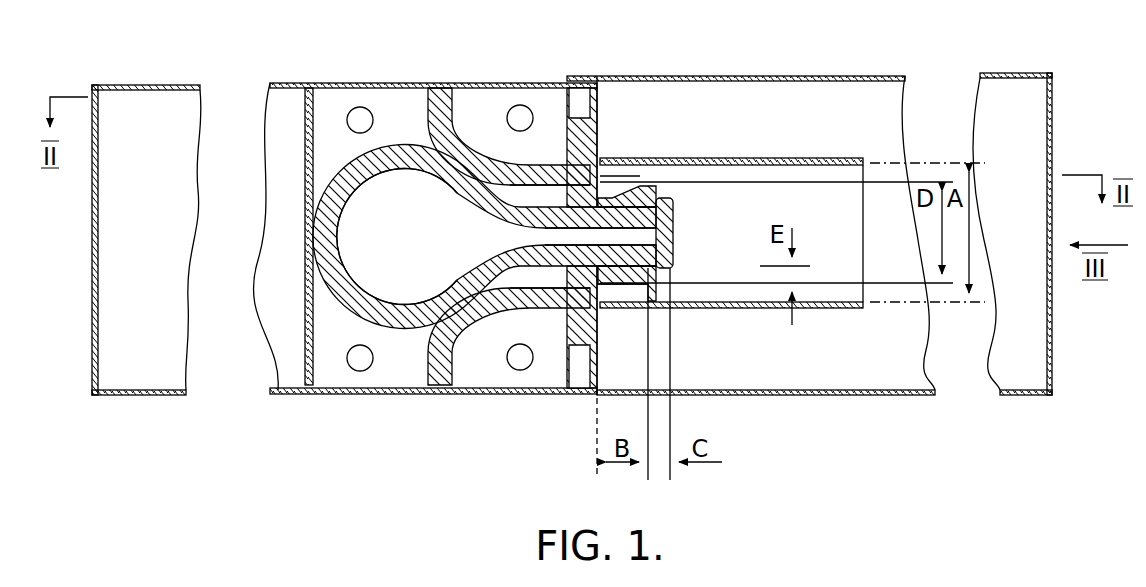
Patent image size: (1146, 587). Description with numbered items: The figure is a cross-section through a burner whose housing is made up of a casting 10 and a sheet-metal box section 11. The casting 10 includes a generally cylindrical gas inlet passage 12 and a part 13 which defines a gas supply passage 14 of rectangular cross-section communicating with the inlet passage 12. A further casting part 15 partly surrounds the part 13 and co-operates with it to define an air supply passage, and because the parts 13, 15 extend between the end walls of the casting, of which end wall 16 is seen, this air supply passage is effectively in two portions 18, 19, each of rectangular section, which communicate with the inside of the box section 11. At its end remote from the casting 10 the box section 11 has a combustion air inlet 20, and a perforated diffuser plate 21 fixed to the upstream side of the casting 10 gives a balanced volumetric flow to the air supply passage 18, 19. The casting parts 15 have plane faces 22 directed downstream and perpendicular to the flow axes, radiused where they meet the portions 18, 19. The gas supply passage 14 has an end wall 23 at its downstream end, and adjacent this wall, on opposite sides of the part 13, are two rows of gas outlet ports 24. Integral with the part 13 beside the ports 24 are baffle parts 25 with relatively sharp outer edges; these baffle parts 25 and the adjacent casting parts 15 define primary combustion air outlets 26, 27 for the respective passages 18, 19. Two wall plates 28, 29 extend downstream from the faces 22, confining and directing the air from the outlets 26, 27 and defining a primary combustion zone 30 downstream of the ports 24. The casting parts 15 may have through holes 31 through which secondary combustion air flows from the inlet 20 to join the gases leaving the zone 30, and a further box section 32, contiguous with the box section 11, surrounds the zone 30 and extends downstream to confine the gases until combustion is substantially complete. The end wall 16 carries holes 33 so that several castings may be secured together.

The casting 10 is at (335, 248).
The box section 11 is at (403, 84).
The gas inlet passage 12 is at (355, 228).
The casting part 13 is at (615, 238).
The gas supply passage 14 is at (658, 245).
The casting part 15 is at (473, 135).
The end wall 16 is at (328, 108).
The air supply passage portion 18 is at (543, 197).
The air supply passage portion 19 is at (551, 275).
The combustion air inlet 20 is at (88, 264).
The perforated diffuser plate 21 is at (300, 352).
The plane face 22 is at (602, 118).
The end wall 23 is at (673, 232).
The gas outlet port 24 is at (657, 193).
The baffle part 25 is at (648, 192).
The primary combustion air outlet 26 is at (599, 96).
The primary combustion air outlet 27 is at (612, 284).
The wall plate 28 is at (821, 158).
The wall plate 29 is at (836, 309).
The primary combustion zone 30 is at (769, 182).
The through hole 31 is at (580, 107).
The box section 32 is at (889, 76).
The hole 33 is at (360, 120).